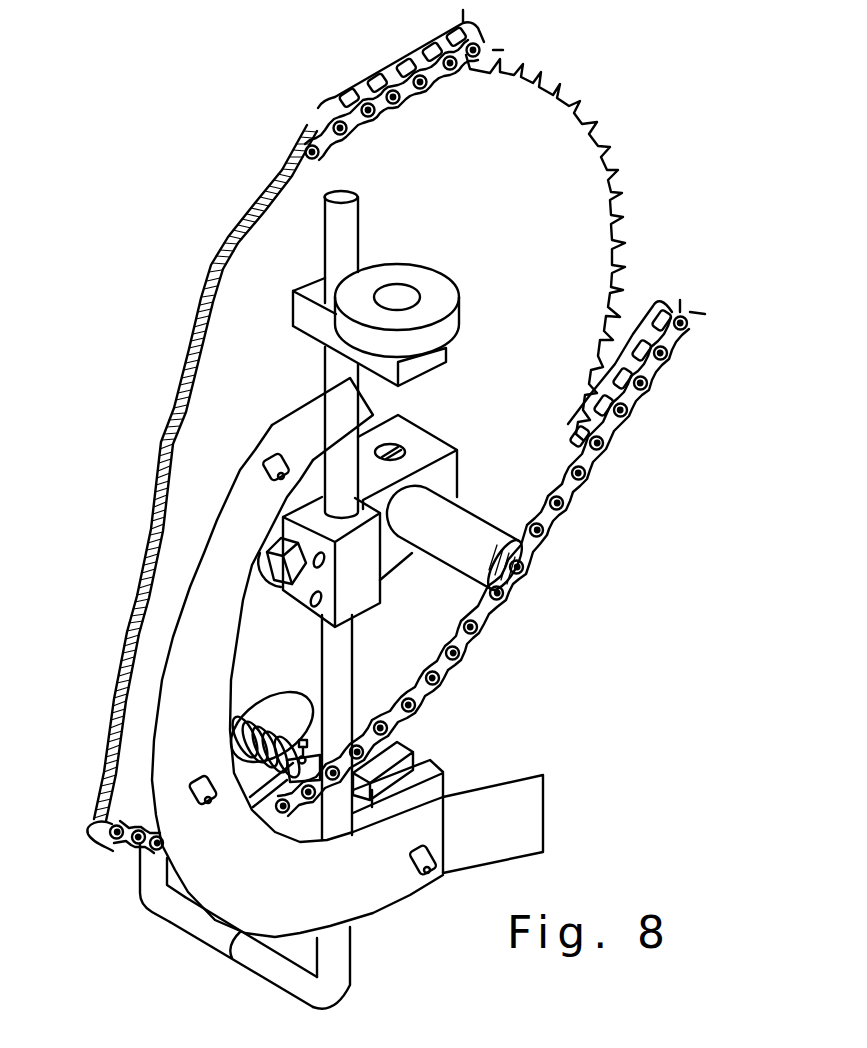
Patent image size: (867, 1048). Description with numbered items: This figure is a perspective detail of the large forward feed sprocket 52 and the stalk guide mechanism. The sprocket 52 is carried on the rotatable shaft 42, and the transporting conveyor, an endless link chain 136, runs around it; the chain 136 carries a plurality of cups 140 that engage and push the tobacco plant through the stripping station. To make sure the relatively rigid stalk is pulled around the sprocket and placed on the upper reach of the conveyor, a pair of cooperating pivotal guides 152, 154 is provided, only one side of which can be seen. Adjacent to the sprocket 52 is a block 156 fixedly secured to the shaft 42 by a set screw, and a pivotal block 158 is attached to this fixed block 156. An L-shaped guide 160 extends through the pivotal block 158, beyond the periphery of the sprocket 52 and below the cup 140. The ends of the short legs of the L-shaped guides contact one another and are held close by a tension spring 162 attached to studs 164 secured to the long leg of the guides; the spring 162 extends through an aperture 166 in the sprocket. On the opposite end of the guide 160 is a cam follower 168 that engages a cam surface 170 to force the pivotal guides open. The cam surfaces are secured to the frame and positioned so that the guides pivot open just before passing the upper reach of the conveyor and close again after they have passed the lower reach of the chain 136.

The endless link chain 136 is at (374, 70).
The forward feed sprocket 52 is at (596, 177).
The cam surface 170 is at (187, 648).
The cam follower 168 is at (424, 261).
The block 156 is at (431, 444).
The rotatable shaft 42 is at (480, 533).
The pivotal block 158 is at (353, 597).
The tension spring 162 is at (285, 702).
The aperture 166 is at (290, 704).
The studs 164 is at (310, 773).
The cups 140 is at (433, 788).
The pivotal guide 154 is at (137, 913).
The L-shaped guide 160 is at (190, 930).
The pivotal guide 152 is at (377, 956).